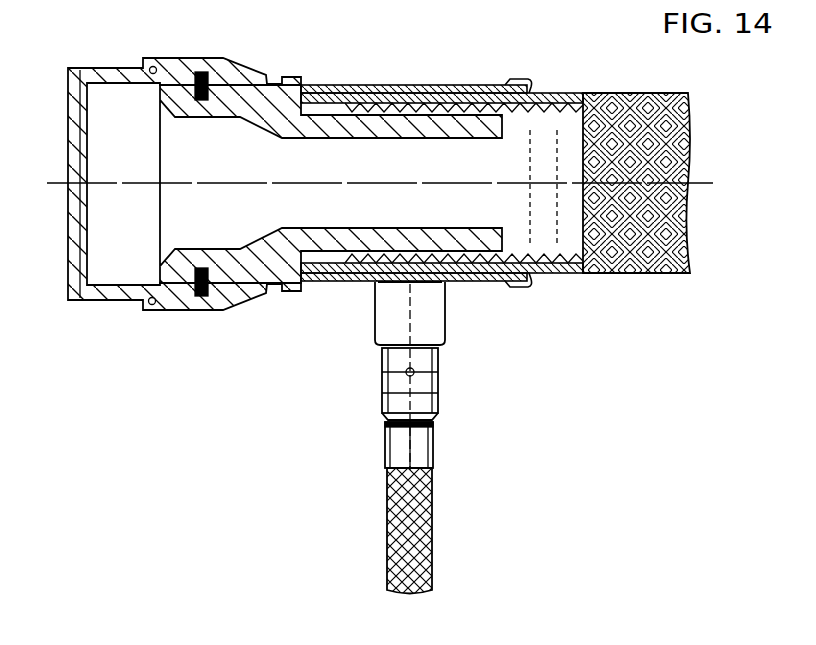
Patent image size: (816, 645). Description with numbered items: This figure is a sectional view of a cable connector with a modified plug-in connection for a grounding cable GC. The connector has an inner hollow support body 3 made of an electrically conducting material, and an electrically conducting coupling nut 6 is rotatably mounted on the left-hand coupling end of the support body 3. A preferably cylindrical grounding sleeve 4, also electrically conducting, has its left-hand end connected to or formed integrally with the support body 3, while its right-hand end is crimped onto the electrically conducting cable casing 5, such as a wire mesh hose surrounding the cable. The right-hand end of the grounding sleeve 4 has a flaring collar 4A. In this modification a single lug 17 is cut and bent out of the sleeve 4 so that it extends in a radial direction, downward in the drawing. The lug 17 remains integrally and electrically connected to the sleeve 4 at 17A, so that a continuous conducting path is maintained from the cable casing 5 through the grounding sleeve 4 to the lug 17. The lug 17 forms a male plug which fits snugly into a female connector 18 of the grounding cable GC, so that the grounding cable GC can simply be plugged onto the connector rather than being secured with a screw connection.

The coupling nut 6 is at (268, 78).
The inner hollow support body 3 is at (315, 238).
The grounding sleeve 4 is at (396, 86).
The flaring collar 4A is at (514, 82).
The cable casing 5 is at (645, 92).
The lug 17 is at (430, 309).
The connection point of lug to sleeve 17A is at (395, 278).
The female connector 18 is at (432, 392).
The grounding cable GC is at (423, 510).